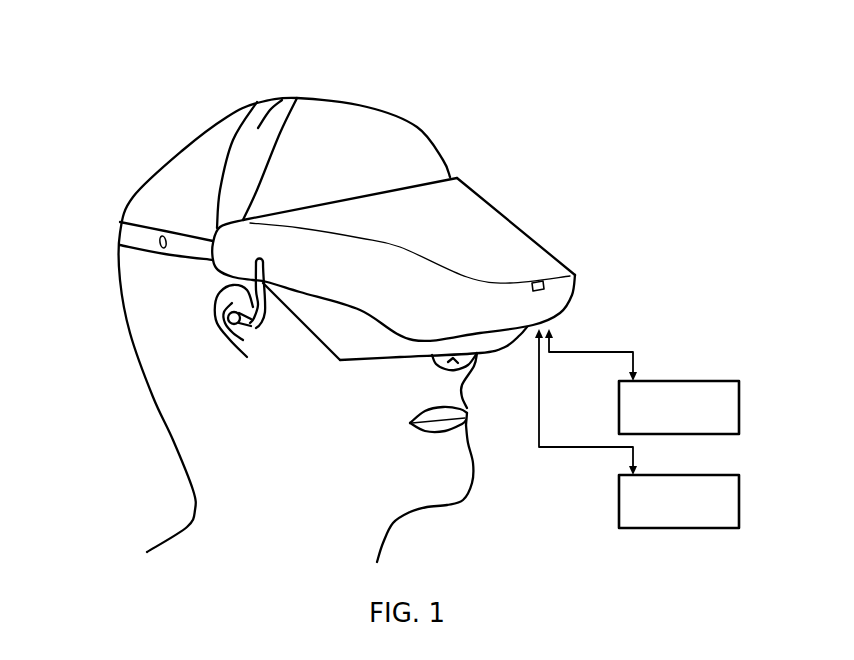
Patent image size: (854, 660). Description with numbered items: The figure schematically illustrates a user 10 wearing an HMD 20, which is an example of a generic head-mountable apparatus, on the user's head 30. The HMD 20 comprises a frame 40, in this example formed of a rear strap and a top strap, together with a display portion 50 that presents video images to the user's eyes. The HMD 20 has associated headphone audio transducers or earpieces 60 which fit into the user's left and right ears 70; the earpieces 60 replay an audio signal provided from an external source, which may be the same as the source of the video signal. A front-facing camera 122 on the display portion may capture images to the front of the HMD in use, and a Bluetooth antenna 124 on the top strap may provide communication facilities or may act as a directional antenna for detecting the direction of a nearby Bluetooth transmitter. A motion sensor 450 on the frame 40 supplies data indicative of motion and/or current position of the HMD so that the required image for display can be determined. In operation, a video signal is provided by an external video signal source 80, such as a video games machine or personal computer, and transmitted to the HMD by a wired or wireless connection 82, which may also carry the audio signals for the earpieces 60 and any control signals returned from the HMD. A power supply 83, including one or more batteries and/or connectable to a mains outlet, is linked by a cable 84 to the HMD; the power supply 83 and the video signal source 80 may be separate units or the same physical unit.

The user 10 is at (96, 408).
The HMD 20 is at (531, 211).
The user's head 30 is at (128, 303).
The frame 40 is at (120, 230).
The display portion 50 is at (557, 253).
The earpieces 60 is at (260, 325).
The user's ears 70 is at (213, 302).
The external video signal source 80 is at (740, 407).
The wired or wireless connection 82 is at (635, 352).
The power supply 83 is at (740, 503).
The cable 84 is at (577, 450).
The front-facing camera 122 is at (545, 286).
The Bluetooth antenna 124 is at (263, 102).
The motion sensor 450 is at (163, 237).